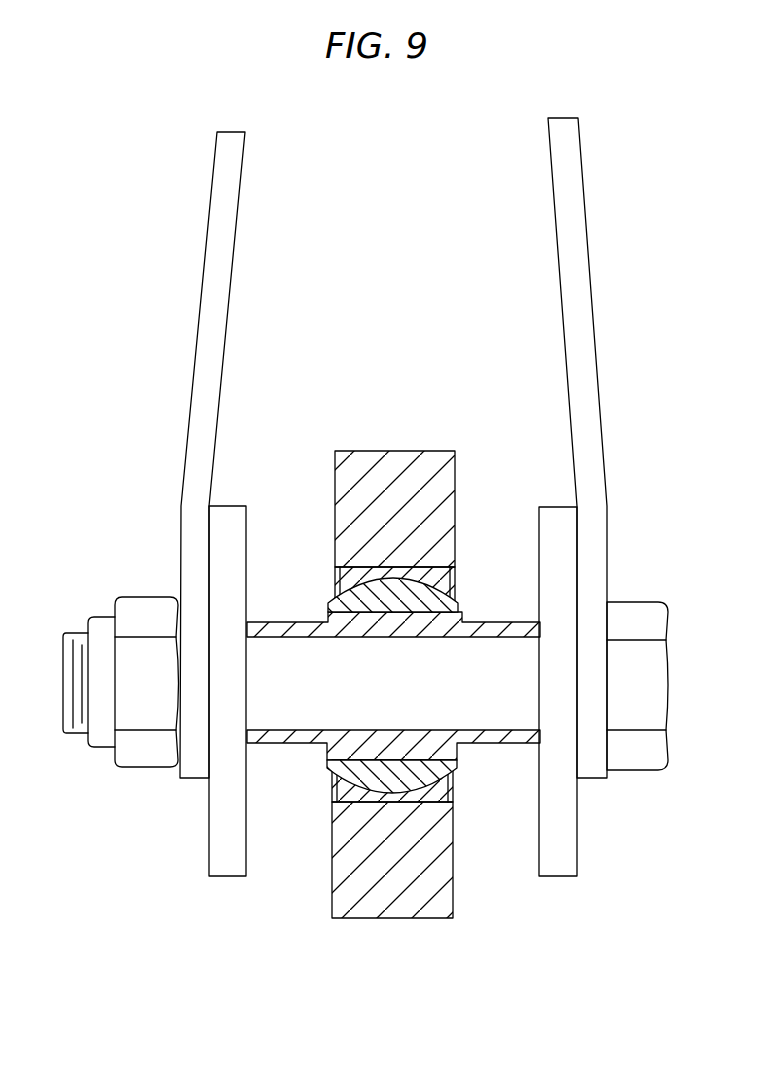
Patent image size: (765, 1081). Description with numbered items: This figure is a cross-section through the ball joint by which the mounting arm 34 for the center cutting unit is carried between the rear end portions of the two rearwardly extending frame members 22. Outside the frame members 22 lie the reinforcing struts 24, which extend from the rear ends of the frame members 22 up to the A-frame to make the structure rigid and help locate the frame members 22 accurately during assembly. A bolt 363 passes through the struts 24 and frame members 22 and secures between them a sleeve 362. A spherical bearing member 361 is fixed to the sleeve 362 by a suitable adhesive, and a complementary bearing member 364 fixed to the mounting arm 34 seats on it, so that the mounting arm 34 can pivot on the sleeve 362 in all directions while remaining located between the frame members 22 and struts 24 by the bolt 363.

The reinforcing struts 24 is at (213, 284).
The rearwardly extending frame members 22 is at (230, 561).
The mounting arm 34 is at (391, 463).
The spherical bearing member 361 is at (333, 779).
The sleeve 362 is at (506, 748).
The bolt 363 is at (636, 752).
The complementary bearing member 364 is at (365, 798).